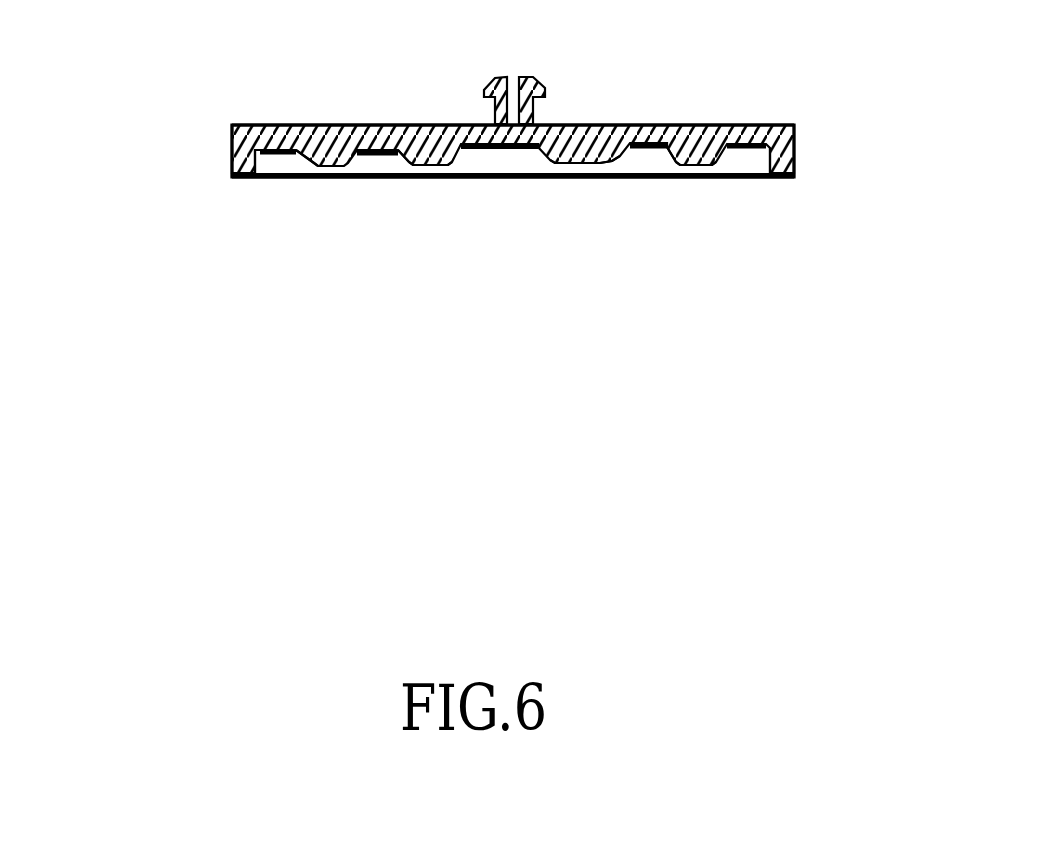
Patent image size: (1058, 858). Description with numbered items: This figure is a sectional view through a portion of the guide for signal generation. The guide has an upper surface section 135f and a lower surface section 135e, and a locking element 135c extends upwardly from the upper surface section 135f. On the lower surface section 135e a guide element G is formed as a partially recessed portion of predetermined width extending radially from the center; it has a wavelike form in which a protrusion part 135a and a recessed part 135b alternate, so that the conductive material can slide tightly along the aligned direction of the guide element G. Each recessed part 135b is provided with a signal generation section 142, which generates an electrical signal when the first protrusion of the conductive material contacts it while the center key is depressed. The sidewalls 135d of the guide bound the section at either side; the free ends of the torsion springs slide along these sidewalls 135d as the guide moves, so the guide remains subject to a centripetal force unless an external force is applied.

The protrusion part 135a is at (432, 166).
The recessed part 135b is at (300, 158).
The locking element 135c is at (537, 87).
The sidewall 135d is at (232, 153).
The lower surface section 135e is at (567, 164).
The upper surface section 135f is at (650, 124).
The signal generation section 142 is at (286, 155).
The guide element G is at (492, 179).